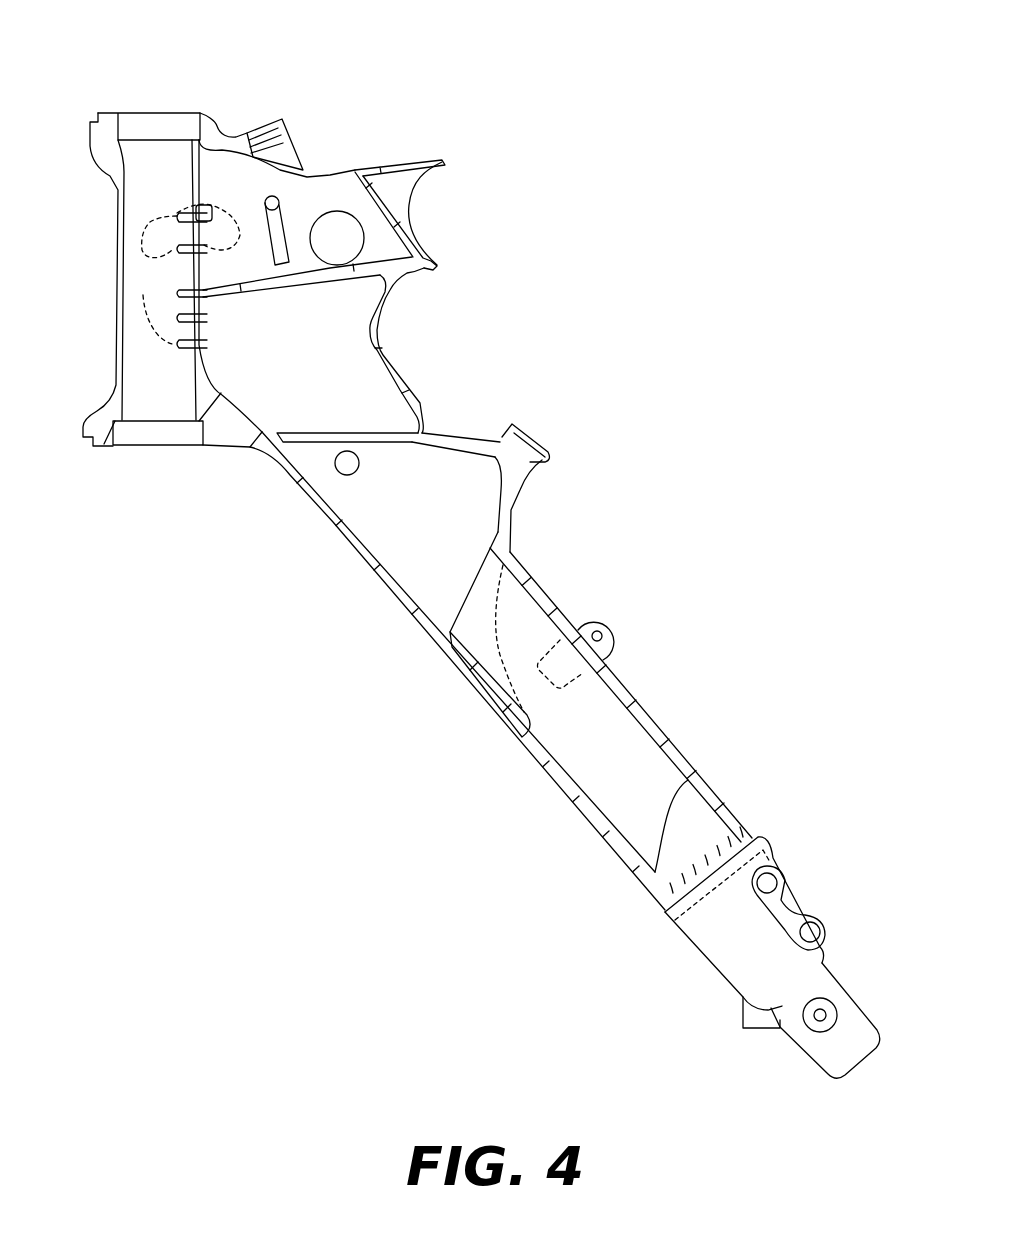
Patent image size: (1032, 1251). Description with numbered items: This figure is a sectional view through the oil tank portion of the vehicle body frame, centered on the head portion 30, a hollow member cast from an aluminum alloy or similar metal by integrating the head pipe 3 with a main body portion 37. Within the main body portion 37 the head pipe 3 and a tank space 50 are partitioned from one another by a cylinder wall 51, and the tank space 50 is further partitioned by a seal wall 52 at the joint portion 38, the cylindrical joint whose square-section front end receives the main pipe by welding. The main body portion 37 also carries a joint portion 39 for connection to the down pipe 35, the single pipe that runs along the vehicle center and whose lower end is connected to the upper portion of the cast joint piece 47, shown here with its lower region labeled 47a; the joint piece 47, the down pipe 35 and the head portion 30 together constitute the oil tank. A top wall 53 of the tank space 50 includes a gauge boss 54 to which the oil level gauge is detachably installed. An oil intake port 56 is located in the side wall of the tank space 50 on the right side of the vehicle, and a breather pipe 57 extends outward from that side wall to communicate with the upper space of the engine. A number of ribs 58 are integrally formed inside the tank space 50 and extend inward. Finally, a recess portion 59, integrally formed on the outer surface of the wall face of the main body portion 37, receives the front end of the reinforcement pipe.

The head pipe 3 is at (112, 195).
The head portion 30 is at (325, 160).
The down pipe 35 is at (560, 777).
The main body portion 37 is at (378, 335).
The joint portion 38 is at (392, 187).
The joint portion 39 is at (453, 667).
The joint piece 47 is at (710, 950).
The mounting plate 47a is at (847, 1010).
The tank space 50 is at (262, 407).
The cylinder wall 51 is at (210, 367).
The seal wall 52 is at (393, 210).
The top wall 53 is at (350, 166).
The gauge boss 54 is at (262, 118).
The oil intake port 56 is at (194, 204).
The breather pipe 57 is at (280, 265).
The ribs 58 is at (150, 256).
The recess portion 59 is at (527, 447).